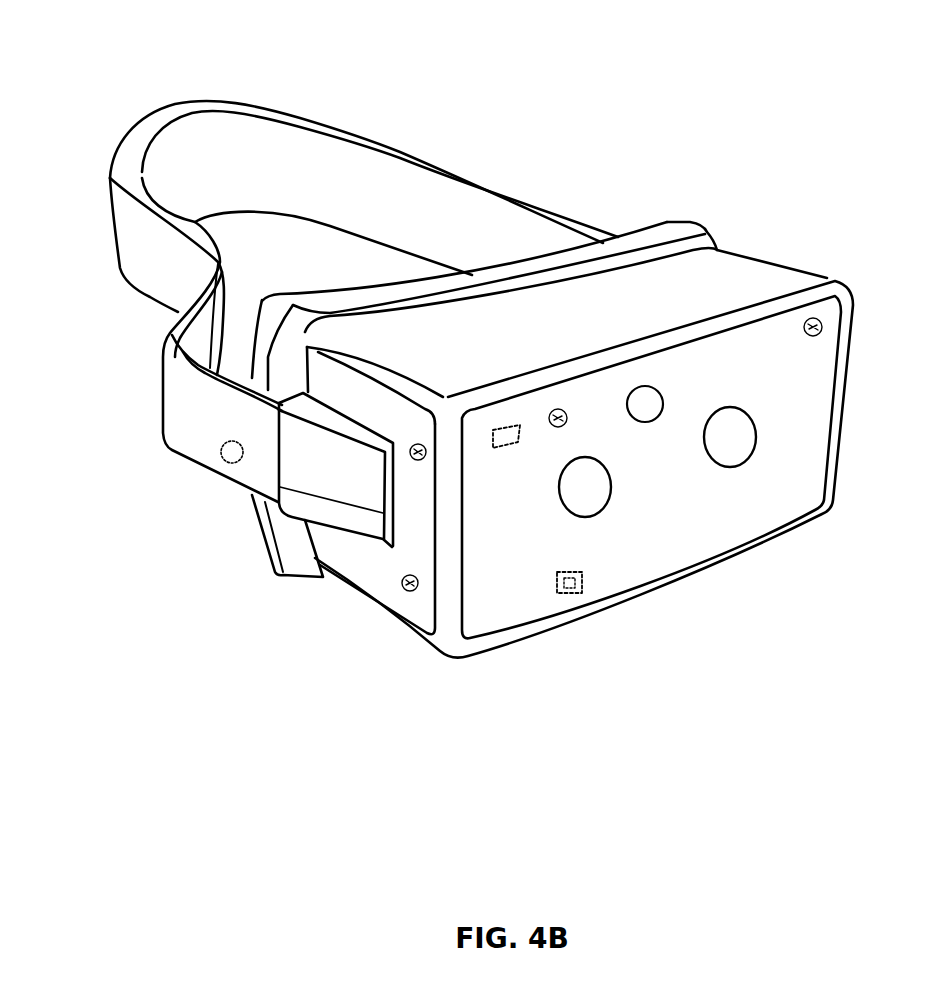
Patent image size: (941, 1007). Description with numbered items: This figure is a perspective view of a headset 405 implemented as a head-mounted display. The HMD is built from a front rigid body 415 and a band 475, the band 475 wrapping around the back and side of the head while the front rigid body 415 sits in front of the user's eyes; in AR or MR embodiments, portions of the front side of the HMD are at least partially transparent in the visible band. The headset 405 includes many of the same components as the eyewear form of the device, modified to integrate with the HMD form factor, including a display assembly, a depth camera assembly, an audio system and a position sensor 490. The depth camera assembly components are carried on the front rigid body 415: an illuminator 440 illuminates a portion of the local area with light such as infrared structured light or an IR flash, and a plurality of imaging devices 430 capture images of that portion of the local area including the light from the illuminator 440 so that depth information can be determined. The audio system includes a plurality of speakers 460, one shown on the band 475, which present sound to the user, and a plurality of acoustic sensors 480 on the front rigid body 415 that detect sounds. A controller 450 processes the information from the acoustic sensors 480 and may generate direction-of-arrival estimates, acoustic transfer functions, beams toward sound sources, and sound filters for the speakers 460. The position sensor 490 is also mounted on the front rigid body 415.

The headset 405 is at (154, 75).
The band 475 is at (487, 180).
The front rigid body 415 is at (853, 337).
The illuminator 440 is at (655, 388).
The imaging device 430 is at (612, 500).
The controller 450 is at (493, 448).
The position sensor 490 is at (583, 583).
The speaker 460 is at (228, 456).
The acoustic sensor 480 is at (403, 587).